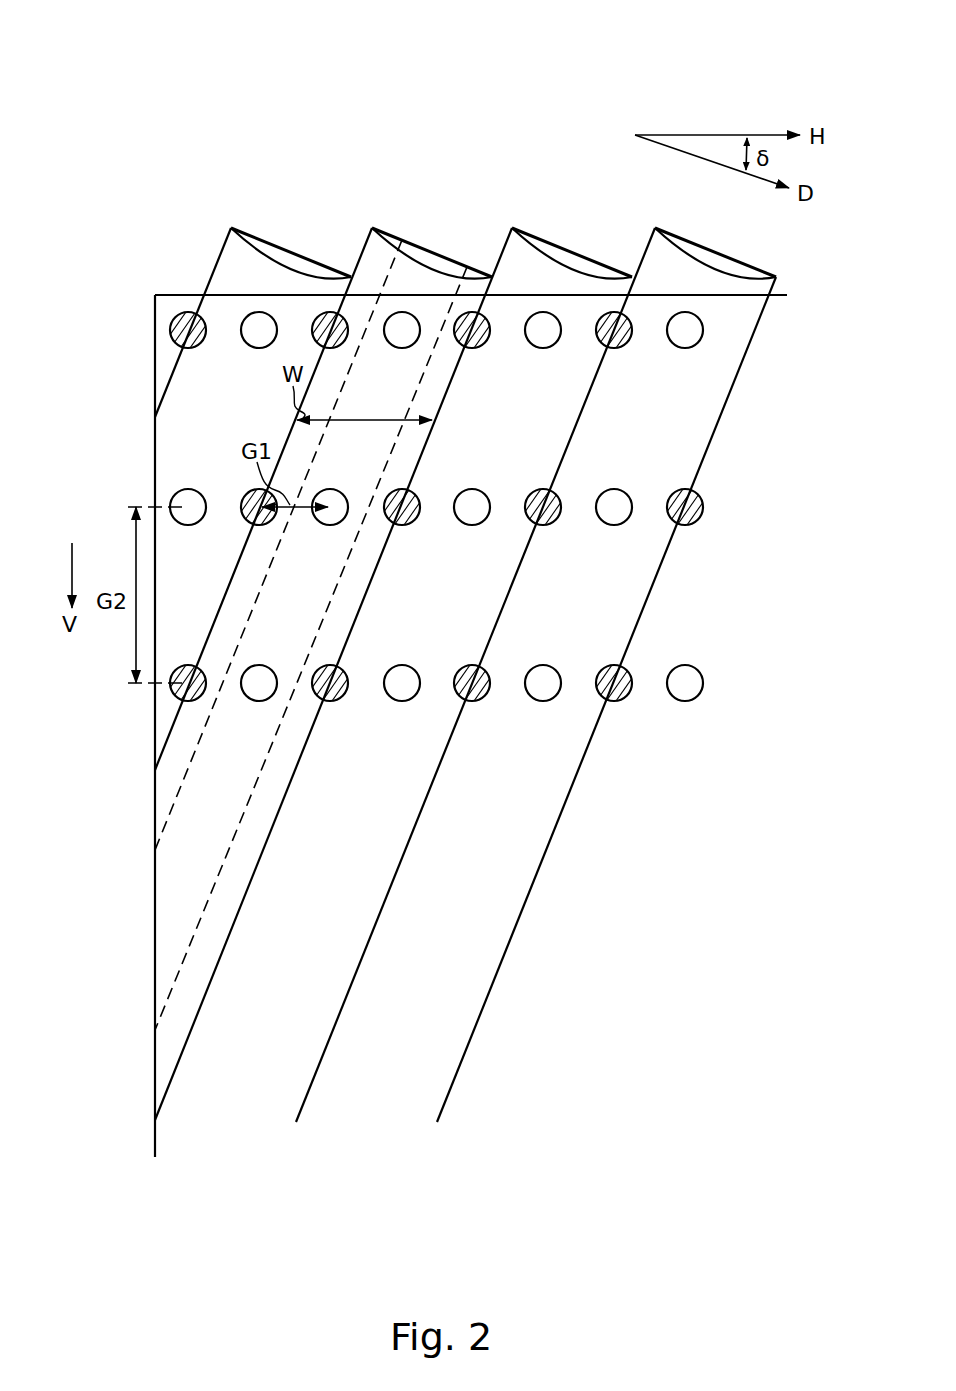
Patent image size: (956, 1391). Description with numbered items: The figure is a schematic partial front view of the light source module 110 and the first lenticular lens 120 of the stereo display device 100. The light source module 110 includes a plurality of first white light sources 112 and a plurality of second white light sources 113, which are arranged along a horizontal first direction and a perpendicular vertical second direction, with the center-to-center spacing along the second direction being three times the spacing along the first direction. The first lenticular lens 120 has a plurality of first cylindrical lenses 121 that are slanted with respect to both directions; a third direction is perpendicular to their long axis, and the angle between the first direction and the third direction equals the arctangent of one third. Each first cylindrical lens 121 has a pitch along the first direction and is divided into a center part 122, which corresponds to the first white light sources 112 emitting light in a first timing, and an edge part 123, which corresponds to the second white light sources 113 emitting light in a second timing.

The stereo display device 100 is at (93, 30).
The light source module 110 is at (155, 321).
The first white light source 112 is at (402, 313).
The second white light source 113 is at (330, 313).
The first lenticular lens 120 is at (230, 230).
The first cylindrical lens 121 is at (532, 153).
The center part 122 is at (450, 282).
The edge part 123 is at (402, 240).